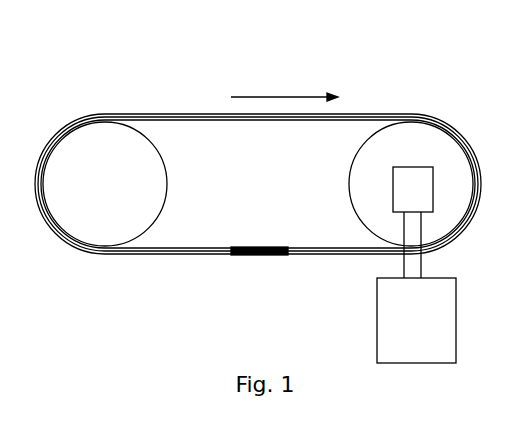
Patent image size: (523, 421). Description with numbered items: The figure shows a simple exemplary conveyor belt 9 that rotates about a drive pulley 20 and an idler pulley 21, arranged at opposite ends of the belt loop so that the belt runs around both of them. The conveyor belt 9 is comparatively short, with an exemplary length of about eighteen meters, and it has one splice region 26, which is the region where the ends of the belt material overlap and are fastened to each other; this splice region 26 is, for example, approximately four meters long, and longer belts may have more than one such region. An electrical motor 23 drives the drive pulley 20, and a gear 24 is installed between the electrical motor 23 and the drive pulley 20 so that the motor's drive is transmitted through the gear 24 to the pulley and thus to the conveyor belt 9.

The conveyor belt 9 is at (372, 114).
The idler pulley 21 is at (114, 195).
The drive pulley 20 is at (428, 161).
The gear 24 is at (426, 201).
The electrical motor 23 is at (402, 328).
The splice region 26 is at (247, 256).